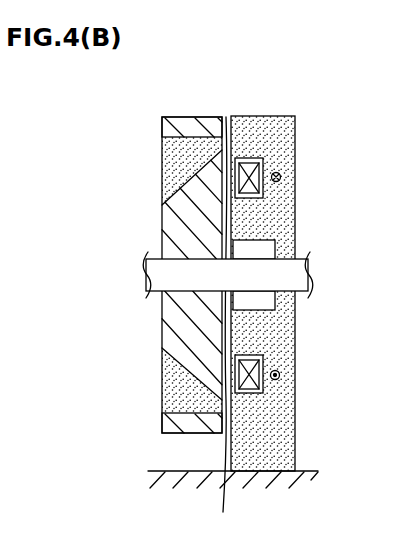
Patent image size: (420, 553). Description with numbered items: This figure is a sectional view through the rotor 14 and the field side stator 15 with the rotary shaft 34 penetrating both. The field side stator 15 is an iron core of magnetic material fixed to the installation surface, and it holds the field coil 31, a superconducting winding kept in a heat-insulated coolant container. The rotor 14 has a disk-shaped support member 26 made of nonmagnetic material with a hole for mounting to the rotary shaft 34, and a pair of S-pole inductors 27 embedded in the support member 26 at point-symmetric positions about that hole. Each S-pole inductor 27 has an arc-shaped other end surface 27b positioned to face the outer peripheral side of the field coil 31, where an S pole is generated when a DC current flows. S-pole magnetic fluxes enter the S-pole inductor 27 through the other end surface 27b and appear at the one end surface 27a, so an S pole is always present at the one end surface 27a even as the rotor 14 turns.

The rotor 14 is at (157, 232).
The field side stator 15 is at (298, 132).
The support member 26 is at (207, 117).
The S-pole inductor 27 is at (185, 133).
The one end surface 27a is at (162, 145).
The other end surface 27b is at (226, 117).
The field coil 31 is at (264, 183).
The shaft 34 is at (308, 278).